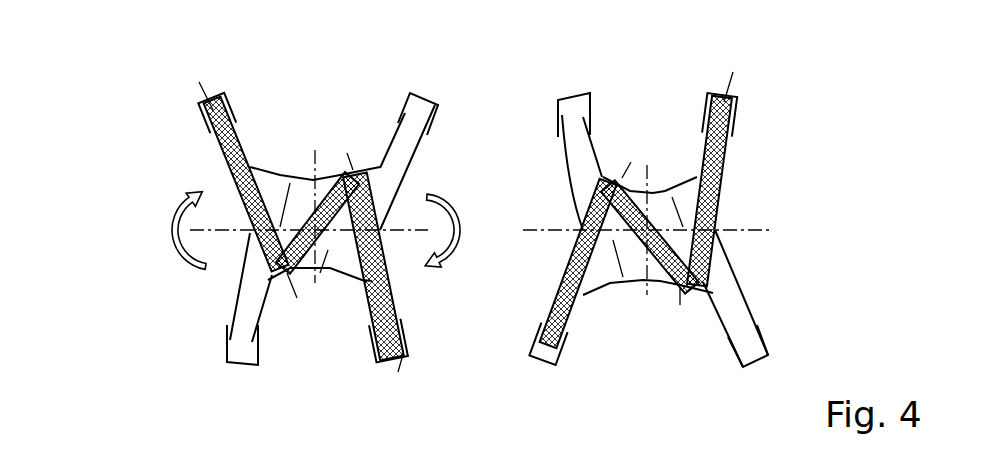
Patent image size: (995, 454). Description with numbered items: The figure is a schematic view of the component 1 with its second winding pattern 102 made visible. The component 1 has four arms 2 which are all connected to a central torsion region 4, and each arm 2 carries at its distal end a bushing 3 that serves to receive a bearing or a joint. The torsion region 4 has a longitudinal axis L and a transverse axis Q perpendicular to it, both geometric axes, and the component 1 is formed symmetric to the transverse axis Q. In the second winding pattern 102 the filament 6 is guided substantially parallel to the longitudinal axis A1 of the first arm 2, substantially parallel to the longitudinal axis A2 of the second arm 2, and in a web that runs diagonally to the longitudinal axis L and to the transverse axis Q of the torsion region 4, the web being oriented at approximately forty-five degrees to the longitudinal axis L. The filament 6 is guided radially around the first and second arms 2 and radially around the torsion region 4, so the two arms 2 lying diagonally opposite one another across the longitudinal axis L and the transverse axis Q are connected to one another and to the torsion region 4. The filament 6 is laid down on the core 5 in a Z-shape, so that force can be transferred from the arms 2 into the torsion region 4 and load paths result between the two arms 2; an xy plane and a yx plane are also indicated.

The component 1 is at (776, 103).
The arm 2 is at (211, 143).
The bushing 3 is at (420, 105).
The torsion region 4 is at (333, 247).
The core 5 is at (728, 300).
The filament 6 is at (253, 245).
The second winding pattern 102 is at (210, 160).
The longitudinal axis of the first arm A1 is at (200, 95).
The longitudinal axis of the second arm A2 is at (398, 371).
The transverse axis Q is at (313, 170).
The longitudinal axis L is at (755, 228).